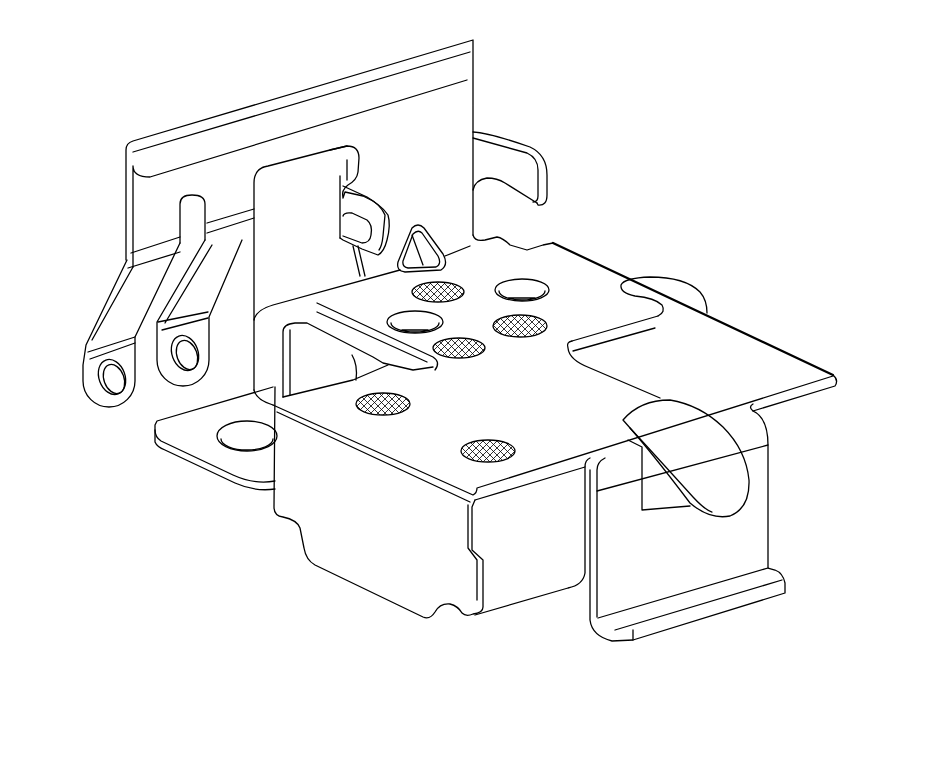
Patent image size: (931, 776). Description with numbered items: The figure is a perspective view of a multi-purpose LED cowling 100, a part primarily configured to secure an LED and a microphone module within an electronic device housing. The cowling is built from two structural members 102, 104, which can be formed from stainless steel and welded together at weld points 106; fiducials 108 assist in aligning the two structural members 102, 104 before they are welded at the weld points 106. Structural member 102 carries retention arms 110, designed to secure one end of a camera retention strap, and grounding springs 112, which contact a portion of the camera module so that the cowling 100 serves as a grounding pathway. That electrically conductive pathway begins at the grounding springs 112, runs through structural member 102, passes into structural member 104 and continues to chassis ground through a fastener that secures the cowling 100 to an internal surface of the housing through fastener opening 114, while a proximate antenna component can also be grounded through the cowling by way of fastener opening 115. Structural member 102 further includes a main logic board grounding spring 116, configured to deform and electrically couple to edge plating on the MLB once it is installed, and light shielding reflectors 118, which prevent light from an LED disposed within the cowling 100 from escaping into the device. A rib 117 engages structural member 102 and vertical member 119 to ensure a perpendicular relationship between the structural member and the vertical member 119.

The multi-purpose LED cowling 100 is at (136, 60).
The structural member 102 is at (532, 391).
The structural member 104 is at (712, 376).
The weld points 106 is at (541, 328).
The fiducials 108 is at (543, 283).
The retention arms 110 is at (543, 158).
The grounding springs 112 is at (83, 358).
The fastener opening 114 is at (651, 293).
The fastener opening 115 is at (243, 452).
The main logic board (MLB) grounding spring 116 is at (750, 482).
The rib 117 is at (390, 256).
The light shielding reflectors 118 is at (390, 542).
The vertical member 119 is at (438, 150).